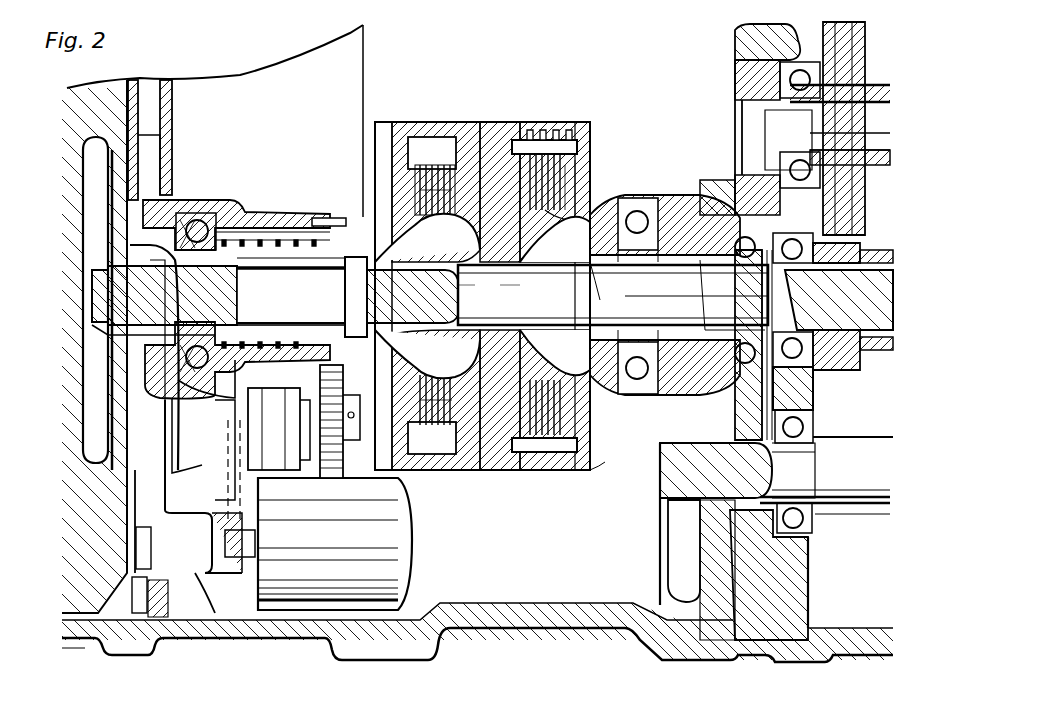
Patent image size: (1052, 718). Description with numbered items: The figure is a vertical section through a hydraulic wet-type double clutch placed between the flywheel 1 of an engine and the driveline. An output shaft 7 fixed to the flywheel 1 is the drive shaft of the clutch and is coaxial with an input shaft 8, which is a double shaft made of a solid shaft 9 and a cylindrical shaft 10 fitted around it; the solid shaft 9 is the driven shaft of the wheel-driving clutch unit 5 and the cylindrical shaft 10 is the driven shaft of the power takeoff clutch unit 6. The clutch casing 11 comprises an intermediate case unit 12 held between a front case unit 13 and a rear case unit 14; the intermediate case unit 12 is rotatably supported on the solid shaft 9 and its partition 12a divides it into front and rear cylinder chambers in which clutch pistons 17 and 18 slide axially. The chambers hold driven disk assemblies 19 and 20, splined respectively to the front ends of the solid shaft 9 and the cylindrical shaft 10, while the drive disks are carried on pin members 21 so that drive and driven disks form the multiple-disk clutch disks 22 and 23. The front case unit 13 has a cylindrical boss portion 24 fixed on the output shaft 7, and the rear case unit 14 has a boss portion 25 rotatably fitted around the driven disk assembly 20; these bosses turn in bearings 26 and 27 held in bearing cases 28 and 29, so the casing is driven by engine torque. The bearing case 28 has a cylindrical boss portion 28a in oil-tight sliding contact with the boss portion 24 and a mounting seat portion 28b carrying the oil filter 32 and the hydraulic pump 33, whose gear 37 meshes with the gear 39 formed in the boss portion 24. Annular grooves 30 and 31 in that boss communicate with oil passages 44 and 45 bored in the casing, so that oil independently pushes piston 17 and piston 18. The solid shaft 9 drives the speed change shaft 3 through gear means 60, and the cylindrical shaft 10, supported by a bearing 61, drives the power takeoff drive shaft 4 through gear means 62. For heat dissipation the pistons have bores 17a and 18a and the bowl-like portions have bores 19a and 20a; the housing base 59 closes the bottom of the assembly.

The flywheel 1 is at (85, 638).
The speed change shaft 3 is at (868, 88).
The power takeoff drive shaft 4 is at (846, 500).
The wheel-driving clutch unit 5 is at (452, 160).
The power takeoff clutch unit 6 is at (570, 180).
The output shaft 7 is at (100, 312).
The input shaft 8 is at (613, 295).
The solid shaft 9 is at (612, 385).
The cylindrical shaft 10 is at (662, 380).
The clutch casing 11 is at (585, 455).
The intermediate case unit 12 is at (505, 130).
The partition 12a is at (540, 334).
The front case unit 13 is at (408, 124).
The rear case unit 14 is at (576, 124).
The clutch piston 17 is at (448, 334).
The bore 17a is at (478, 294).
The clutch piston 18 is at (527, 317).
The bore 18a is at (522, 294).
The driven disk assembly 19 is at (412, 296).
The bore 19a is at (395, 220).
The driven disk assembly 20 is at (628, 215).
The bore 20a is at (582, 205).
The pin member 21 is at (580, 145).
The clutch disks 22 is at (440, 462).
The clutch disks 23 is at (558, 462).
The cylindrical boss portion 24 is at (135, 350).
The cylindrical boss portion 25 is at (688, 294).
The bearing 26 is at (195, 218).
The bearing 27 is at (636, 395).
The bearing case 28 is at (182, 388).
The cylindrical boss portion 28a is at (258, 212).
The mounting seat portion 28b is at (202, 467).
The bearing case 29 is at (702, 198).
The annular groove 30 is at (240, 256).
The annular groove 31 is at (291, 296).
The oil filter 32 is at (412, 585).
The hydraulic pump 33 is at (272, 470).
The gear 37 is at (345, 470).
The gear 39 is at (328, 218).
The oil passage 44 is at (352, 258).
The oil passage 45 is at (252, 325).
The housing bottom 59 is at (604, 618).
The gear means 60 is at (865, 215).
The bearing 61 is at (780, 386).
The gear means 62 is at (668, 528).